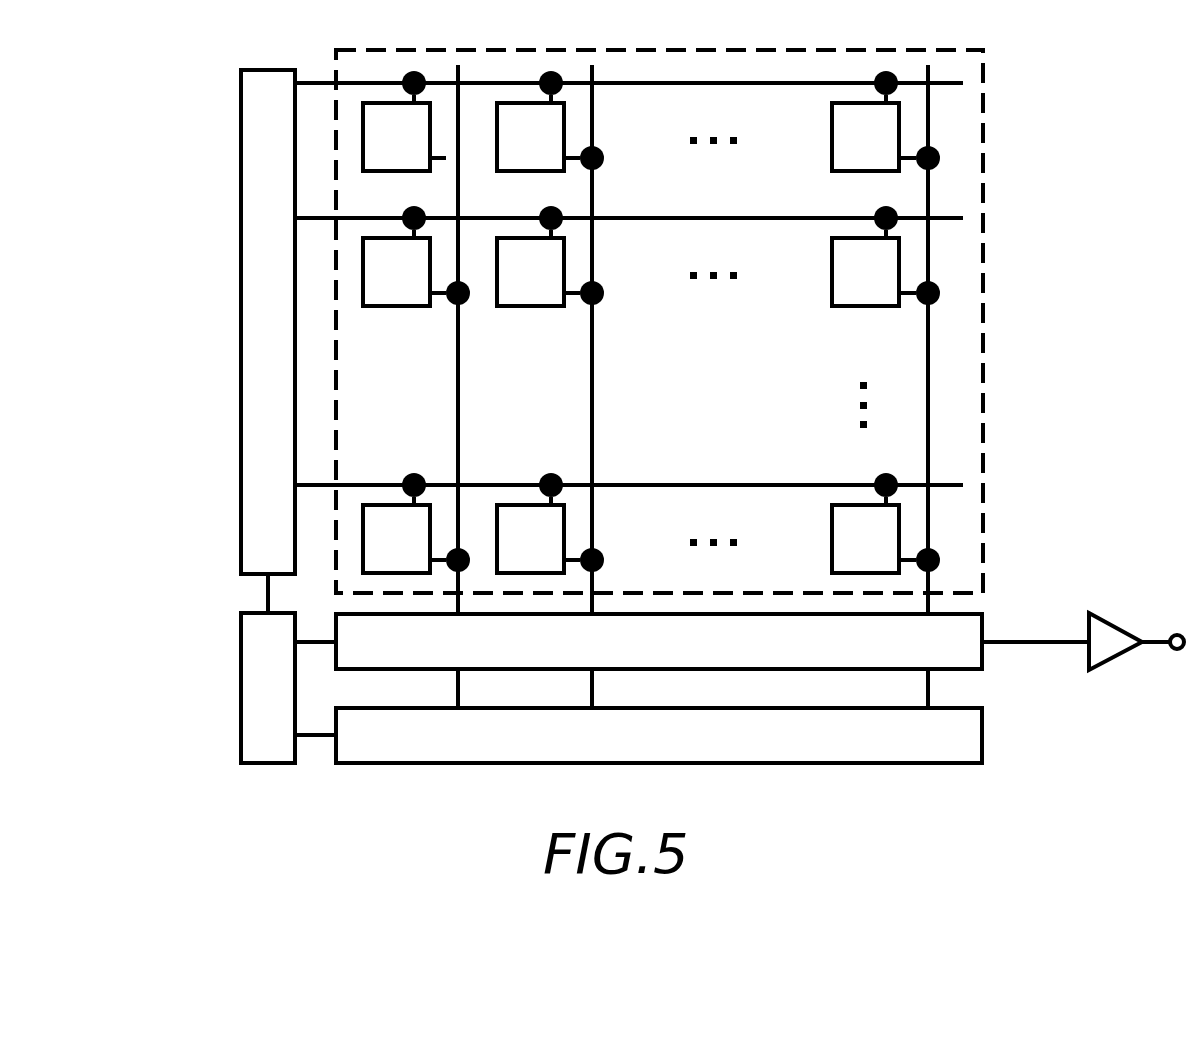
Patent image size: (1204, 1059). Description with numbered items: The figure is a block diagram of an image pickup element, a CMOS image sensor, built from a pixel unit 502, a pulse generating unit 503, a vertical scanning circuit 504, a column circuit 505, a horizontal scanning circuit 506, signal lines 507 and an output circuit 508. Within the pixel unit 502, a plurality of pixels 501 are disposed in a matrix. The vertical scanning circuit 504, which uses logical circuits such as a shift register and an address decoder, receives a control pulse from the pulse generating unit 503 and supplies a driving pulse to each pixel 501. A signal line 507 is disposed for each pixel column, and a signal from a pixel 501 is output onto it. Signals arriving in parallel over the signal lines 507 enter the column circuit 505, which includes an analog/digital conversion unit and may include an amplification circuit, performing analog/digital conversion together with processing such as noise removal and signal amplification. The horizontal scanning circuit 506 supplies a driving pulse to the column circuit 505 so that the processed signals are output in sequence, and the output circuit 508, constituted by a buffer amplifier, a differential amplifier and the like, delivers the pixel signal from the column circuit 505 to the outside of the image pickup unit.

The pixel 501 is at (395, 147).
The pixel unit 502 is at (983, 107).
The pulse generating unit 503 is at (241, 682).
The vertical scanning circuit 504 is at (241, 172).
The column circuit 505 is at (982, 655).
The horizontal scanning circuit 506 is at (982, 735).
The signal line 507 is at (456, 372).
The output circuit 508 is at (1119, 622).